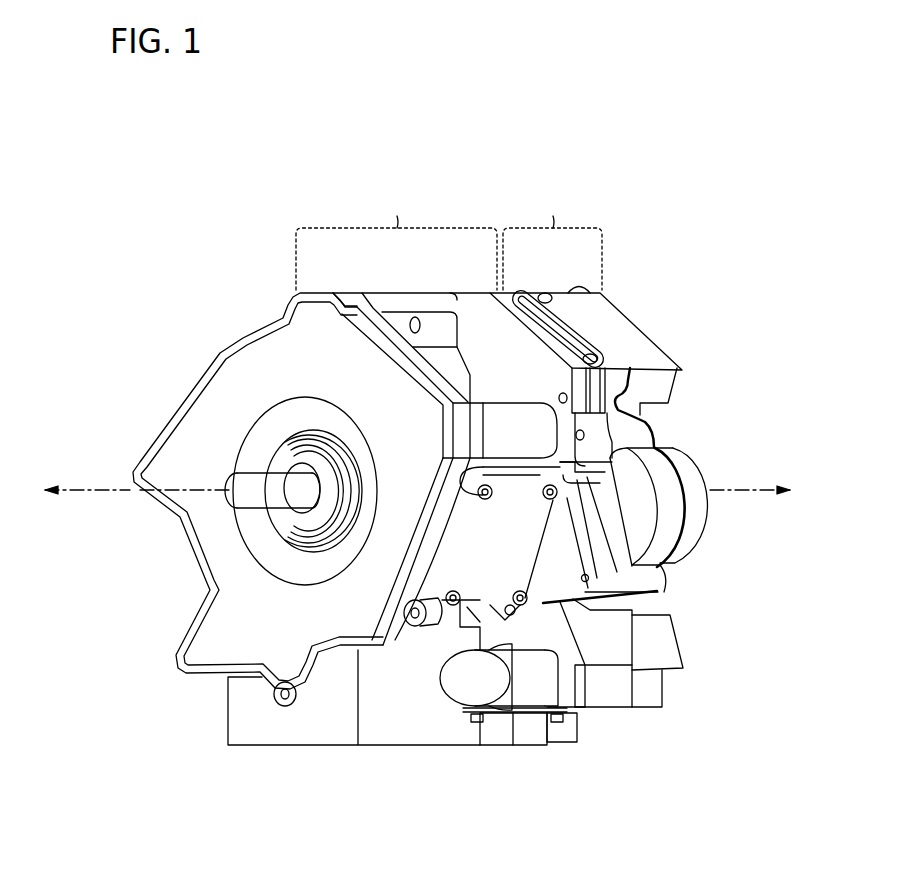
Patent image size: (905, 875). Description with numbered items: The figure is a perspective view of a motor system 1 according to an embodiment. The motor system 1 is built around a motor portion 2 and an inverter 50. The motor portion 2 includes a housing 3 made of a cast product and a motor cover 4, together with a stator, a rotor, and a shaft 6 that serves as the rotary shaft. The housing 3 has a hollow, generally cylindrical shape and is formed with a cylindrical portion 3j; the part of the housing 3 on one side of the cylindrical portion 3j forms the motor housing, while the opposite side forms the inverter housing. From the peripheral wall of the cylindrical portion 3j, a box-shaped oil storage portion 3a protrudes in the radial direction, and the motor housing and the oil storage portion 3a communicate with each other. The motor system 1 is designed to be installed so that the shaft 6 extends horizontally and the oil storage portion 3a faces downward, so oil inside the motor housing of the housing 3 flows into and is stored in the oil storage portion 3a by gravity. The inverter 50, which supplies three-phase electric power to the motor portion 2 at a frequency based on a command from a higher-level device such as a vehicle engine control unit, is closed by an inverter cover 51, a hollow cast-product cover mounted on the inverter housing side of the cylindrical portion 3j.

The motor system 1 is at (684, 238).
The motor portion 2 is at (396, 243).
The housing 3 is at (422, 292).
The oil storage portion 3a is at (228, 714).
The cylindrical portion 3j is at (364, 292).
The motor cover 4 is at (241, 335).
The shaft 6 is at (256, 464).
The inverter 50 is at (606, 320).
The inverter cover 51 is at (632, 322).